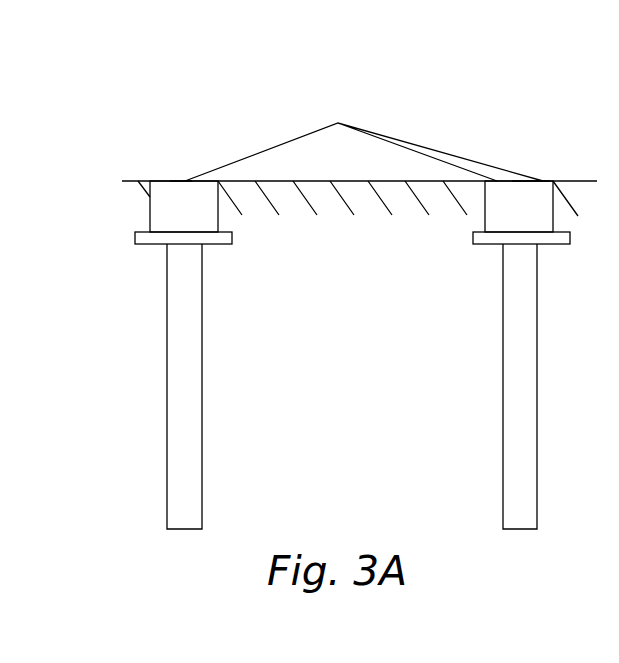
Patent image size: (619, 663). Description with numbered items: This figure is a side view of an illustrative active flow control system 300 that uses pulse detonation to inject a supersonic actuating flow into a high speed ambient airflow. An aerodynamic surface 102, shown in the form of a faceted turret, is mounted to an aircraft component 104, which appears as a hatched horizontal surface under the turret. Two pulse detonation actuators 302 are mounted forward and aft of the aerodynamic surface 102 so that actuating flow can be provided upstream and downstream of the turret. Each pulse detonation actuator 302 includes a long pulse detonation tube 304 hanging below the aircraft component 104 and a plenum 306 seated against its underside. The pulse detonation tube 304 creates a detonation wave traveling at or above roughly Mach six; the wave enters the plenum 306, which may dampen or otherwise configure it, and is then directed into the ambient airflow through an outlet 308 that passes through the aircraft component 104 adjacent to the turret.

The active flow control system 300 is at (195, 52).
The aerodynamic surface 102 is at (365, 168).
The aircraft component 104 is at (138, 181).
The outlet 308 is at (177, 181).
The plenum 306 is at (160, 218).
The pulse detonation tube 304 is at (182, 427).
The pulse detonation actuator 302 is at (477, 370).